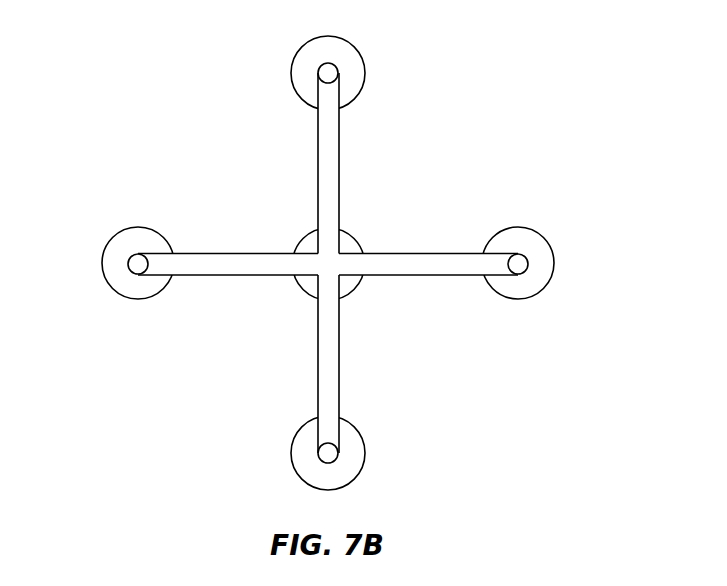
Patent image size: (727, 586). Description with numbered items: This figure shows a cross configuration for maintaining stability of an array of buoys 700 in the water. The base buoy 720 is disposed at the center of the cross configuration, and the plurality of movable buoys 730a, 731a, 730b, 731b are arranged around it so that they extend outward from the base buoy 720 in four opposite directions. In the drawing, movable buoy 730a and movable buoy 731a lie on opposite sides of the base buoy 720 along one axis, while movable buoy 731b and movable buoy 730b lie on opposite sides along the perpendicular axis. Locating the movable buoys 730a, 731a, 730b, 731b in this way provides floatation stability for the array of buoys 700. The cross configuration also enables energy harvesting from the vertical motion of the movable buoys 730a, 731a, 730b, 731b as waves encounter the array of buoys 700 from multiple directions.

The array of buoys 700 is at (170, 58).
The base buoy 720 is at (350, 243).
The movable buoy 730a is at (110, 262).
The movable buoy 730b is at (302, 453).
The movable buoy 731a is at (545, 263).
The movable buoy 731b is at (360, 70).